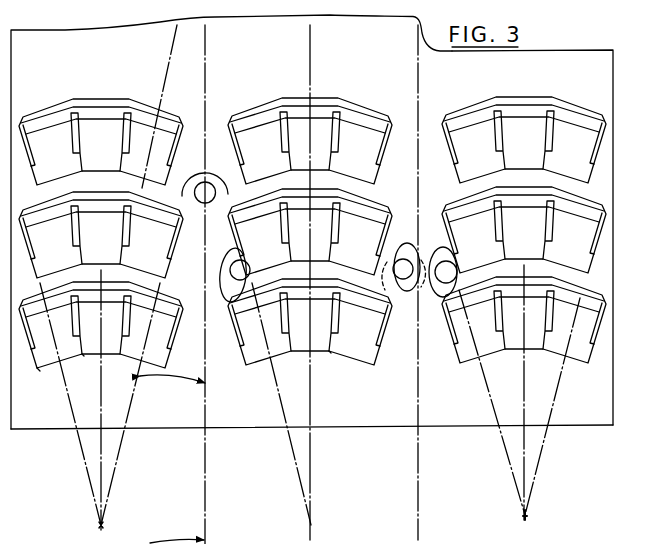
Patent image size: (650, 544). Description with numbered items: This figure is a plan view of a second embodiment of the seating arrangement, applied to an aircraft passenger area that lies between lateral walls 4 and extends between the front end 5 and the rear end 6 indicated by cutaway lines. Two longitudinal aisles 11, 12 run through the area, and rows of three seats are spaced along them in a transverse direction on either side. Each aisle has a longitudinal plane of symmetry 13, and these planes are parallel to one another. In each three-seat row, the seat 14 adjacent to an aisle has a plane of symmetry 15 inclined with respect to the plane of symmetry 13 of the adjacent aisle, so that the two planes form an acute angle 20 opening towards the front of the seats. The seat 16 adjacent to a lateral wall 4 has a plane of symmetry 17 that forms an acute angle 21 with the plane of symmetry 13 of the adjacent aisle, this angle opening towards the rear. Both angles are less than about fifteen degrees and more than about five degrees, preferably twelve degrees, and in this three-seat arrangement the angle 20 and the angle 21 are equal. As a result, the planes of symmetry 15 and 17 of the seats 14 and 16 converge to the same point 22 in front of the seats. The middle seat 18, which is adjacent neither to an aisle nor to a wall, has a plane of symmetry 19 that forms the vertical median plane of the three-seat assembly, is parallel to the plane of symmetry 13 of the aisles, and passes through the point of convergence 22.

The lateral walls 4 is at (11, 80).
The front end 5 is at (580, 426).
The rear end 6 is at (561, 50).
The aisle 11 is at (242, 365).
The aisle 12 is at (446, 363).
The longitudinal plane of symmetry 13 is at (205, 480).
The seat adjacent to an aisle 14 is at (168, 364).
The plane of symmetry 15 is at (118, 465).
The seat adjacent to a lateral wall 16 is at (38, 367).
The plane of symmetry 17 is at (84, 465).
The middle seat 18 is at (84, 360).
The plane of symmetry 19 is at (101, 420).
The acute angle 20 is at (177, 383).
The acute angle 21 is at (160, 541).
The point of convergence 22 is at (101, 525).